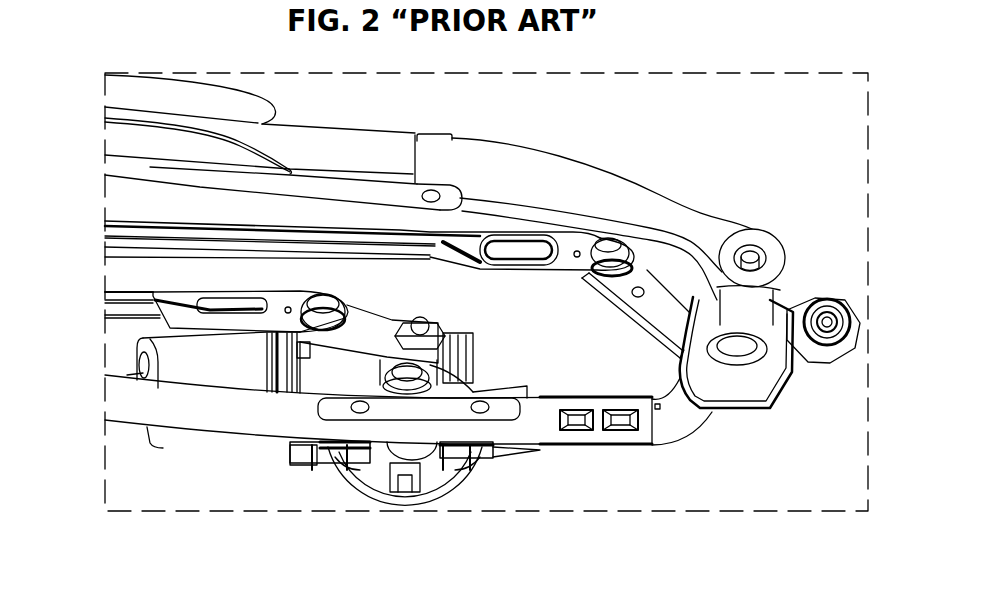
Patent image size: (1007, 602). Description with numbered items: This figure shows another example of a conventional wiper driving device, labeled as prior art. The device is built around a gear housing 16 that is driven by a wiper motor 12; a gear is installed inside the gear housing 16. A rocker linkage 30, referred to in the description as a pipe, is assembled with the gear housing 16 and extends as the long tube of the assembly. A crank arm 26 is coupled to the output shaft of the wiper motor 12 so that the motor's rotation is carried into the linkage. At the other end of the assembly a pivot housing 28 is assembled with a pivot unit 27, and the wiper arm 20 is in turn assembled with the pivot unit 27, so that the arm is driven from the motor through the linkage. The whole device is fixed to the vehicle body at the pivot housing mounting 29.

The wiper motor 12 is at (200, 373).
The gear housing 16 is at (408, 500).
The wiper arm 20 is at (607, 180).
The crank arm 26 is at (463, 337).
The pivot unit 27 is at (658, 297).
The pivot housing 28 is at (744, 390).
The pivot housing mounting 29 is at (824, 300).
The rocker linkage 30 is at (263, 420).